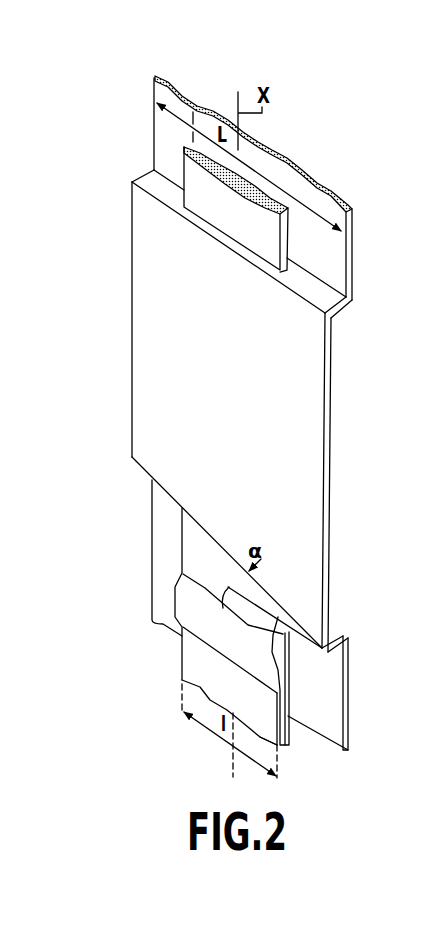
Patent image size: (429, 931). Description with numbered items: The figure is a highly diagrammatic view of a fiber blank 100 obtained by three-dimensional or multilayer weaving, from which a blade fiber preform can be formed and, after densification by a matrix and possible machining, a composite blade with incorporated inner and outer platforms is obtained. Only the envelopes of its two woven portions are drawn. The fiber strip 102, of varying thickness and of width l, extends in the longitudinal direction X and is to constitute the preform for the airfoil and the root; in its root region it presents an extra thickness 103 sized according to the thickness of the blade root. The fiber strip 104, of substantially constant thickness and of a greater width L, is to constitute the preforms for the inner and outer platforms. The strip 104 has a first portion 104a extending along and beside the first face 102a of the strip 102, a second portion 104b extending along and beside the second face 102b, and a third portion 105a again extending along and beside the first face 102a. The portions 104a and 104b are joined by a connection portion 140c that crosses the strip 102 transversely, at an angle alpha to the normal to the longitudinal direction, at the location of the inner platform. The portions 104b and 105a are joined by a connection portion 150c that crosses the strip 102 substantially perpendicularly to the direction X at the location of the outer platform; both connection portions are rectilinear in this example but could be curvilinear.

The fiber blank 100 is at (119, 349).
The fiber strip 102 is at (200, 573).
The first face of the strip 102a is at (286, 727).
The second face of the strip 102b is at (203, 663).
The extra thickness 103 is at (280, 668).
The fiber strip 104 is at (158, 417).
The first portion 104a is at (348, 675).
The second portion 104b is at (331, 446).
The third portion 105a is at (352, 277).
The connection portion 140c is at (333, 638).
The connection portion 150c is at (345, 308).